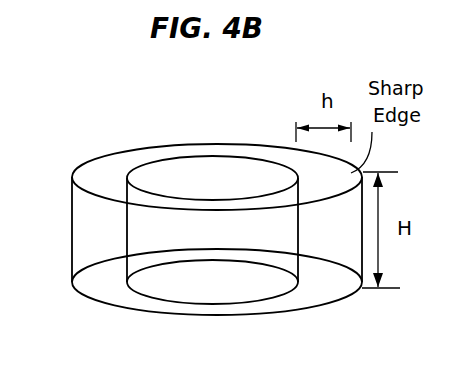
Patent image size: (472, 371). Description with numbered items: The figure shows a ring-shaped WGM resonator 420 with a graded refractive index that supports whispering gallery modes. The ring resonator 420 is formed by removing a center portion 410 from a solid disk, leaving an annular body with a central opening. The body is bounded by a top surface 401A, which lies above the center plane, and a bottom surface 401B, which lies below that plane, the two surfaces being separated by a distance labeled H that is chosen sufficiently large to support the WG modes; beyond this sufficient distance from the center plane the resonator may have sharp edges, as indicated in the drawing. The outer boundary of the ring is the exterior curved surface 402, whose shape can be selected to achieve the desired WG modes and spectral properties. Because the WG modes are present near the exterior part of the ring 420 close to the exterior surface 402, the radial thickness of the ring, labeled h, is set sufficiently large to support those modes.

The ring-shaped WGM resonator 420 is at (184, 212).
The center portion 410 is at (239, 170).
The top surface 401A is at (107, 175).
The bottom surface 401B is at (117, 302).
The exterior curved surface 402 is at (70, 219).